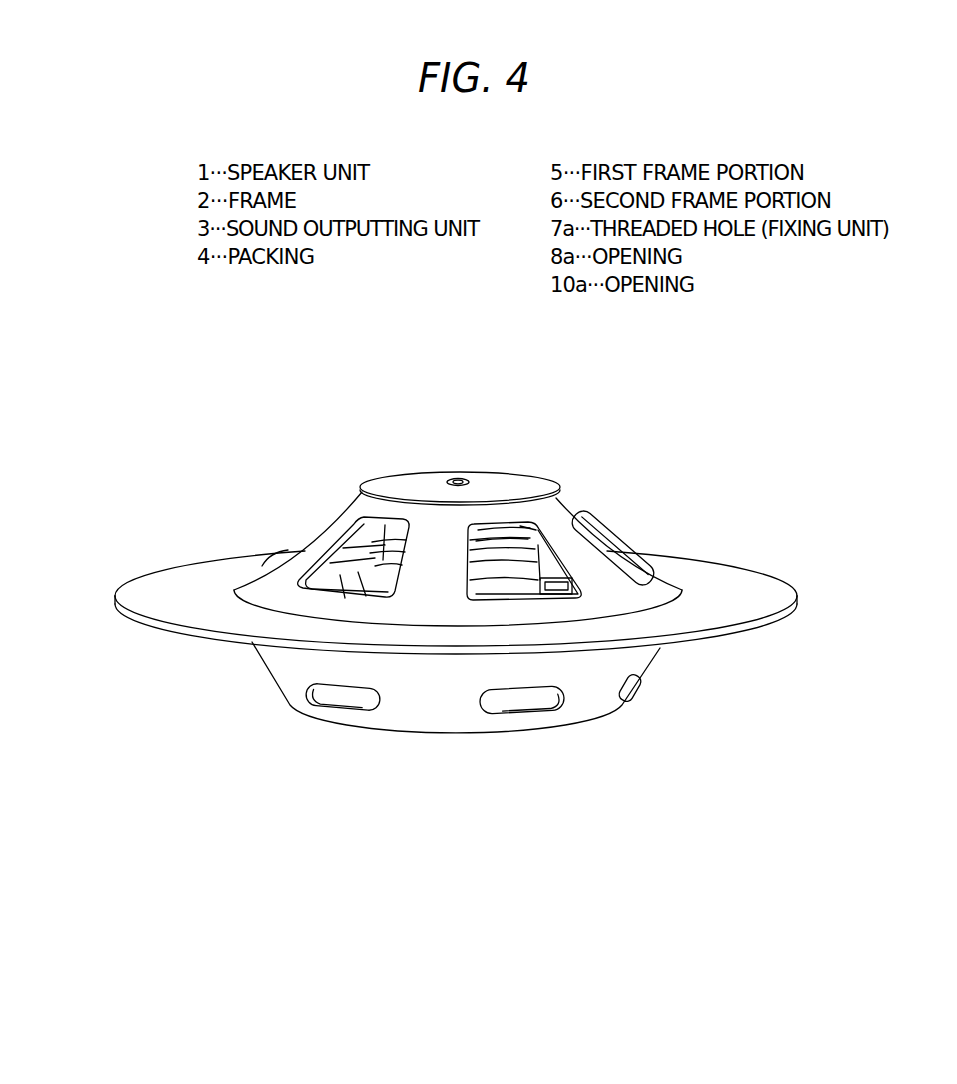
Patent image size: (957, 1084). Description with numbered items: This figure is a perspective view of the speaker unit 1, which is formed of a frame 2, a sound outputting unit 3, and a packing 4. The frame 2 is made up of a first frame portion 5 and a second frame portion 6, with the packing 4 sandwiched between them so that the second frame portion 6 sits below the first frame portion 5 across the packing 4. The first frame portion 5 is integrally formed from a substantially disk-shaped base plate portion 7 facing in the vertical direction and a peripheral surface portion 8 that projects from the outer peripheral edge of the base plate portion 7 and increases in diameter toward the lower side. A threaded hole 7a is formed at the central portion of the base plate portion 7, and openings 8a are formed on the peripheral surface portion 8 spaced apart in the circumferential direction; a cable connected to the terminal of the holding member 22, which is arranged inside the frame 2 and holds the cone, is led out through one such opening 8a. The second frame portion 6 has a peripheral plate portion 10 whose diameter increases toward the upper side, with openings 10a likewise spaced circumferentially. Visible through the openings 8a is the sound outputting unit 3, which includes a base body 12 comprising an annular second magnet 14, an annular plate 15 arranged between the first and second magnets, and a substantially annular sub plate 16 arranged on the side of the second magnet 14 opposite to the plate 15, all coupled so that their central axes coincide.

The speaker unit 1 is at (713, 360).
The frame 2 is at (889, 558).
The sound outputting unit 3 is at (322, 550).
The packing 4 is at (168, 572).
The first frame portion 5 is at (563, 500).
The second frame portion 6 is at (643, 662).
The base plate portion 7 is at (420, 477).
The threaded hole 7a is at (459, 480).
The peripheral surface portion 8 is at (318, 528).
The opening 8a is at (358, 515).
The peripheral plate portion 10 is at (423, 717).
The opening 10a is at (343, 708).
The base body 12 is at (503, 532).
The second magnet 14 is at (483, 540).
The plate 15 is at (525, 525).
The sub plate 16 is at (522, 568).
The holding member 22 is at (318, 532).